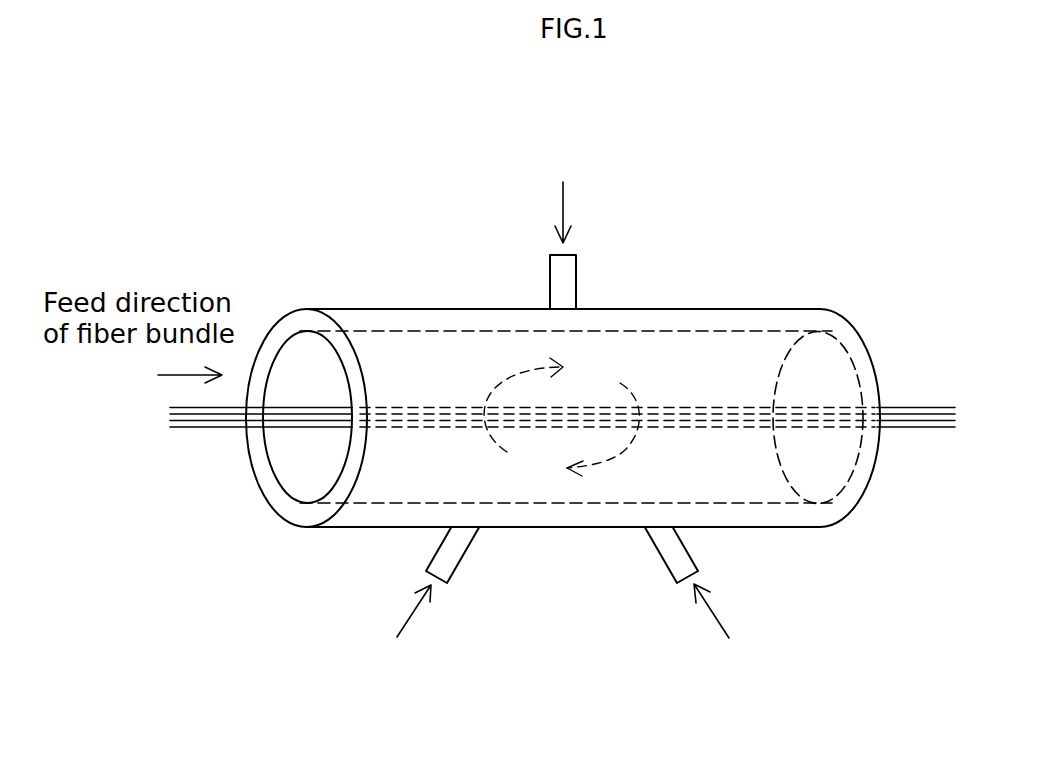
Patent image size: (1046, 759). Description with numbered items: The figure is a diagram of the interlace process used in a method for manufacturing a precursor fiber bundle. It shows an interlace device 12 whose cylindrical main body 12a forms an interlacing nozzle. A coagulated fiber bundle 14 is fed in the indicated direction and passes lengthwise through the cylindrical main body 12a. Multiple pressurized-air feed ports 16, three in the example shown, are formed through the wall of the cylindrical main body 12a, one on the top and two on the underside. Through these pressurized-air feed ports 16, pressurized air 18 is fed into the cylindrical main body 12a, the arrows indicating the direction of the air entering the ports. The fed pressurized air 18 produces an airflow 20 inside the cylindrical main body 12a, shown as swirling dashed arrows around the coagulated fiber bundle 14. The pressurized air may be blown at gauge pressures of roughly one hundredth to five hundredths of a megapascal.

The interlace device 12 is at (772, 297).
The cylindrical main body 12a is at (748, 477).
The coagulated fiber bundle 14 is at (915, 432).
The pressurized-air feed ports 16 is at (572, 284).
The pressurized air 18 is at (562, 196).
The airflow 20 is at (510, 378).